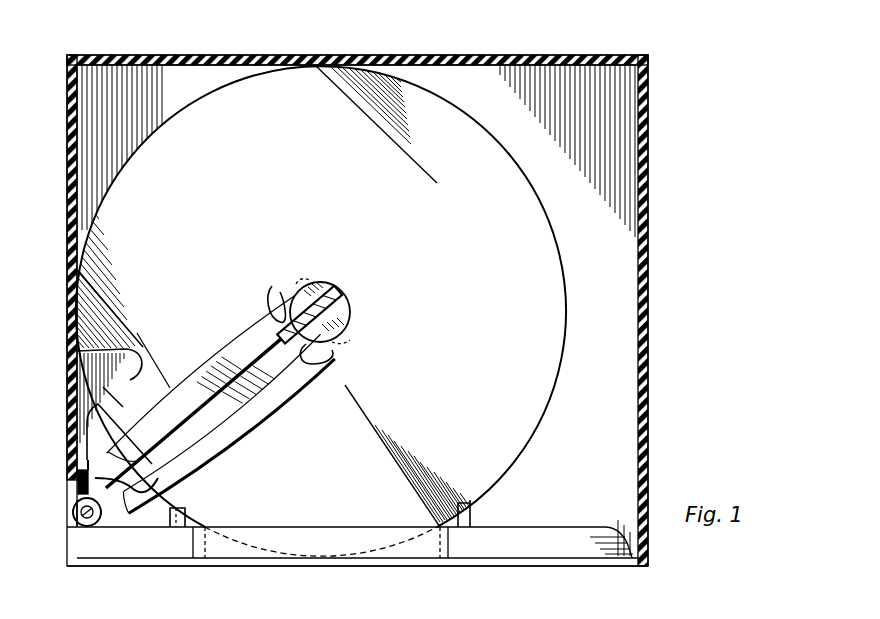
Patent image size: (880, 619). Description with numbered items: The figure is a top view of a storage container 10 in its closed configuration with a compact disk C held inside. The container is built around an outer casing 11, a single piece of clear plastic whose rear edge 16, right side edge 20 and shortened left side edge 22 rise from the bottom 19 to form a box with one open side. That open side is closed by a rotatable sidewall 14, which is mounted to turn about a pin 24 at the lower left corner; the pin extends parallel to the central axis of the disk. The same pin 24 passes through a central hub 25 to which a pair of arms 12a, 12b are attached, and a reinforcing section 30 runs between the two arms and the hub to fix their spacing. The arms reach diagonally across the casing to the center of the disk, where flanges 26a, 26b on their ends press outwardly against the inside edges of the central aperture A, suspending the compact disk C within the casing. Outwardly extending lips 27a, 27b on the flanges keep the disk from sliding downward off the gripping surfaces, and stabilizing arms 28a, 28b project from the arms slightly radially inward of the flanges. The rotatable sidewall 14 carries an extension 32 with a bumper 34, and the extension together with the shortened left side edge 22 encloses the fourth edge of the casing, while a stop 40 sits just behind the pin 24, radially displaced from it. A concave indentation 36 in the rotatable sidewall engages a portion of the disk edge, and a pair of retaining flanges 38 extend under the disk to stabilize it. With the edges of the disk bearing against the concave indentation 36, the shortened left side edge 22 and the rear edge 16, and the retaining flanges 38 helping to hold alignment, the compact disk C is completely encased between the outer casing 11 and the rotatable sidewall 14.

The storage container 10 is at (716, 263).
The outer casing 11 is at (568, 50).
The rear edge 16 is at (252, 55).
The right side edge 20 is at (660, 378).
The shortened left side edge 22 is at (67, 212).
The bottom 19 is at (602, 452).
The compact disk C is at (515, 152).
The central aperture A is at (347, 300).
The rotatable sidewall 14 is at (455, 560).
The retaining flanges 38 is at (178, 528).
The concave indentation 36 is at (232, 538).
The arm 12a is at (238, 345).
The arm 12b is at (240, 403).
The reinforcing section 30 is at (158, 508).
The bumper 34 is at (150, 372).
The extension 32 is at (67, 405).
The stop 40 is at (77, 470).
The pin 24 is at (74, 510).
The central hub 25 is at (67, 540).
The flange 26a is at (322, 282).
The flange 26b is at (340, 322).
The outwardly extending lip 27a is at (305, 280).
The outwardly extending lip 27b is at (350, 338).
The stabilizing arm 28a is at (272, 290).
The stabilizing arm 28b is at (335, 368).